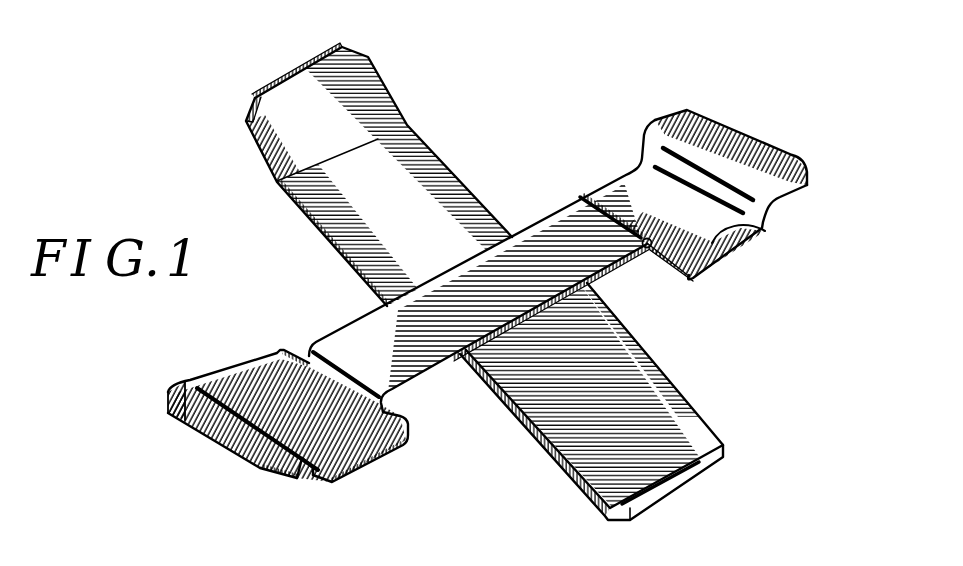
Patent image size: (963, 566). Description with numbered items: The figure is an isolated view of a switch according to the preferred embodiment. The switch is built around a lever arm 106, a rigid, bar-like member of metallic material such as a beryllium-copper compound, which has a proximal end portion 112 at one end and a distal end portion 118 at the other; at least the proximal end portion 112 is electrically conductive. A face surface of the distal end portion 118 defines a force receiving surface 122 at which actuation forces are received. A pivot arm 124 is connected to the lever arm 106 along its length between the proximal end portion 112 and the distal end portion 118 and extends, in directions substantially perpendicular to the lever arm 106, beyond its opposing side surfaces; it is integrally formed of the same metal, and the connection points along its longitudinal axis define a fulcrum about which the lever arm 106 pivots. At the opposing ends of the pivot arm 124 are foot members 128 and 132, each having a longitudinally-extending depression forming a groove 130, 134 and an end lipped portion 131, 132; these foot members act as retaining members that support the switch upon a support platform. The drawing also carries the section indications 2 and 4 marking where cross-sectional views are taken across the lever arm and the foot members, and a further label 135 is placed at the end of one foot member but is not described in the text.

The lever arm 106 is at (412, 122).
The force receiving surface 122 is at (436, 173).
The distal end portion 118 is at (275, 172).
The proximal end portion 112 is at (675, 386).
The pivot arm 124 is at (618, 275).
The foot member 128 is at (709, 112).
The groove 130 is at (763, 227).
The lipped portion 131 is at (803, 157).
The foot member 132 is at (299, 462).
The groove 134 is at (367, 446).
The left clip end 135 is at (168, 395).
The section line 2- 2 is at (287, 63).
The section line 4- 4 is at (781, 122).